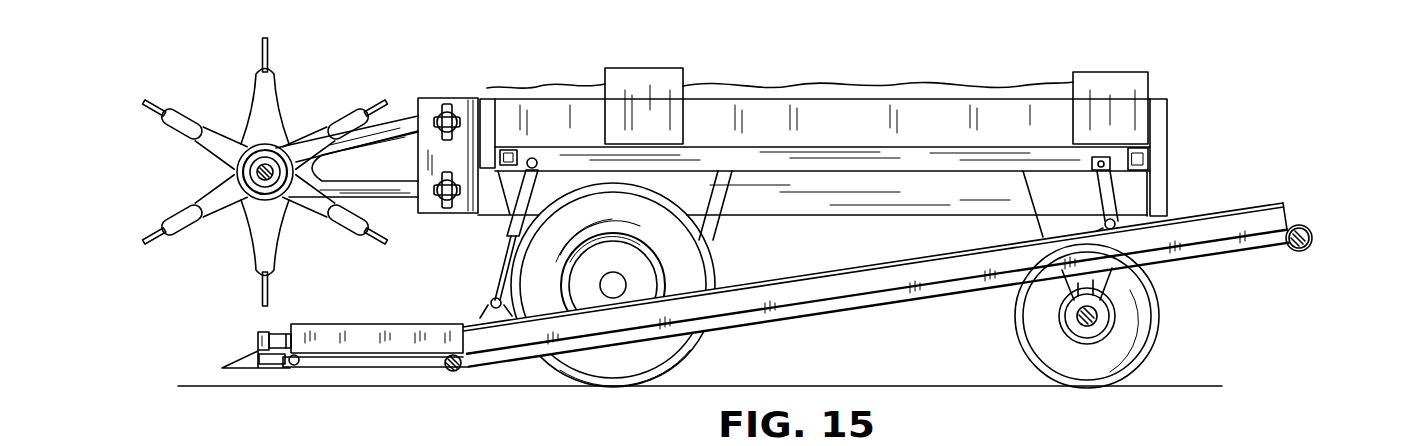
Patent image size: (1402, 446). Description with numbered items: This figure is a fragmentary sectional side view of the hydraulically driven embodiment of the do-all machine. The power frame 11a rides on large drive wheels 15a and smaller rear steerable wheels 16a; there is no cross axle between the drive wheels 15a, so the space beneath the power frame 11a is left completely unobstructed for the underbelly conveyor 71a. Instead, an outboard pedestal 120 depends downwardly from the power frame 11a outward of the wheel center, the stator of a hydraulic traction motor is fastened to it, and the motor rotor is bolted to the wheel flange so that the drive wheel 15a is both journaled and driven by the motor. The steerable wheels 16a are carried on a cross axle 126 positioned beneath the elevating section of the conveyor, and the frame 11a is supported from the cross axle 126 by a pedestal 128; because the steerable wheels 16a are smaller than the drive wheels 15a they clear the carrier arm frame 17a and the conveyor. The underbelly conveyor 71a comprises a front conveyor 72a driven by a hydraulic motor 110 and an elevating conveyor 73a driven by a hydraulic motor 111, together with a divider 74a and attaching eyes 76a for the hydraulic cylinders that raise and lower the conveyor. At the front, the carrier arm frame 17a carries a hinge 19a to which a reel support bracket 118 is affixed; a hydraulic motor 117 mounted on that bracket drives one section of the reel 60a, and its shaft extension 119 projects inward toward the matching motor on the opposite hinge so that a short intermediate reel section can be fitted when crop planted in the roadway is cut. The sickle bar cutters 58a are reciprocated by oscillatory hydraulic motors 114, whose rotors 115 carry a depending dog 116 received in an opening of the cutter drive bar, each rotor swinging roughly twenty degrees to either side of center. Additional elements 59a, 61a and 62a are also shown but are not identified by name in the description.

The power frame 11a is at (622, 78).
The drive wheels 15a is at (692, 354).
The rear steerable wheels 16a is at (1095, 316).
The carrier arm frame 17a is at (522, 110).
The hinge 19a is at (436, 101).
The sickle bar cutters 58a is at (287, 368).
The skid plate 59a is at (232, 365).
The reel 60a is at (264, 167).
The hub 61a is at (242, 168).
The arm 62a is at (256, 50).
The underbelly conveyor 71a is at (816, 304).
The front conveyor 72a is at (357, 352).
The elevating conveyor 73a is at (910, 283).
The divider 74a is at (426, 330).
The attaching eyes 76a is at (528, 160).
The hydraulic motor 110 is at (458, 372).
The hydraulic motor 111 is at (1306, 231).
The oscillatory hydraulic motors 114 is at (283, 331).
The rotors 115 is at (258, 342).
The depending dog 116 is at (258, 370).
The hydraulic motor 117 is at (250, 202).
The reel support bracket 118 is at (384, 192).
The shaft extensions 119 is at (237, 177).
The outboard pedestal 120 is at (703, 202).
The cross axle 126 is at (1083, 318).
The pedestal 128 is at (1100, 282).